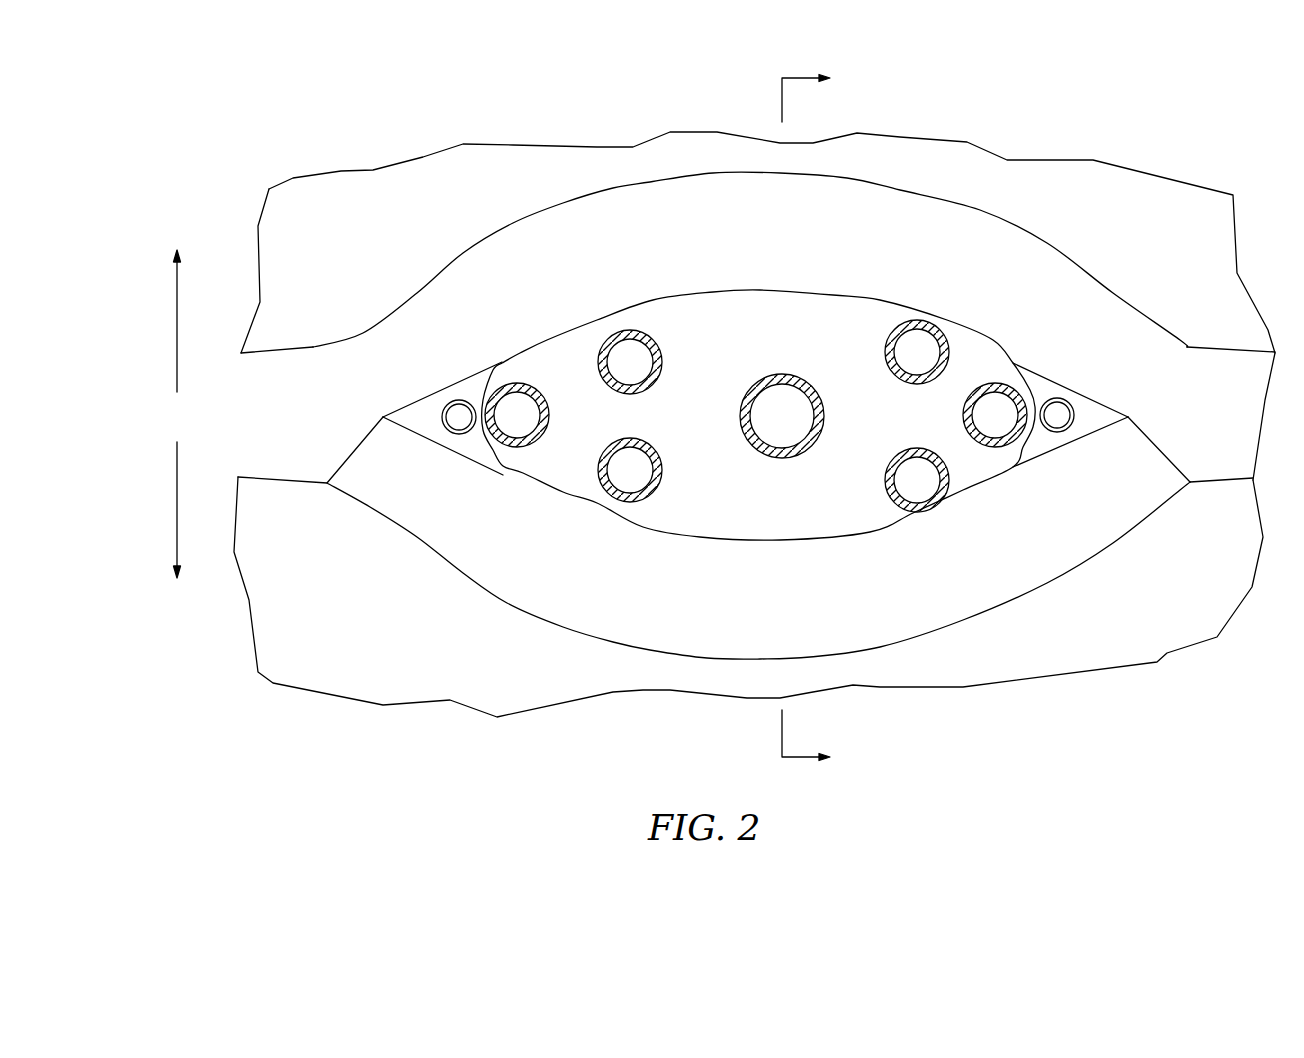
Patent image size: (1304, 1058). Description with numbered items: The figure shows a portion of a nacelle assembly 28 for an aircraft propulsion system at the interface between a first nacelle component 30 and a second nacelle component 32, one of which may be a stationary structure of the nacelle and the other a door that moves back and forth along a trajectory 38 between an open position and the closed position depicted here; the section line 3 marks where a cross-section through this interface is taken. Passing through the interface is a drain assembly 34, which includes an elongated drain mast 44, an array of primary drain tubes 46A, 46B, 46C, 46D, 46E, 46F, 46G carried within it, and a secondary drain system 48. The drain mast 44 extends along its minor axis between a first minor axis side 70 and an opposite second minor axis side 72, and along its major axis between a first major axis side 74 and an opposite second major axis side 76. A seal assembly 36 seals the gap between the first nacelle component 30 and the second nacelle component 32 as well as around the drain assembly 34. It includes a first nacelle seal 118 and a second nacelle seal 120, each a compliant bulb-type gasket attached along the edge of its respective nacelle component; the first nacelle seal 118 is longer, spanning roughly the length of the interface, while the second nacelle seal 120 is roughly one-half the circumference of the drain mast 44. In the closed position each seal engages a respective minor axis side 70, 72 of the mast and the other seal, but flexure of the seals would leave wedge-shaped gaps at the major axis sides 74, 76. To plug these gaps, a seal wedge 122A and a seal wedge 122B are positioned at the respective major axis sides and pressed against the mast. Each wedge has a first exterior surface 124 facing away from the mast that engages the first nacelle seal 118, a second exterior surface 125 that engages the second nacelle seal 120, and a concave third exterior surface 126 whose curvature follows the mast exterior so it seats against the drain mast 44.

The nacelle assembly 28 is at (234, 125).
The first nacelle component 30 is at (1192, 188).
The second nacelle component 32 is at (1197, 632).
The drain assembly 34 is at (915, 305).
The seal assembly 36 is at (1187, 346).
The trajectory 38 is at (176, 414).
The drain mast 44 is at (837, 294).
The drain tube 46A is at (549, 418).
The drain tube 46B is at (662, 344).
The drain tube 46C is at (618, 503).
The drain tube 46D is at (766, 457).
The drain tube 46E is at (886, 351).
The drain tube 46F is at (886, 492).
The drain tube 46G is at (963, 412).
The drain system 48 is at (448, 437).
The first minor axis side 70 is at (760, 290).
The second minor axis side 72 is at (763, 542).
The first major axis side 74 is at (473, 440).
The second major axis side 76 is at (1022, 462).
The first nacelle seal 118 is at (515, 223).
The second nacelle seal 120 is at (500, 603).
The seal wedge 122A is at (482, 373).
The seal wedge 122B is at (1060, 462).
The first exterior surface 124 is at (440, 397).
The second exterior surface 125 is at (440, 440).
The third exterior surface 126 is at (503, 367).
The section line 3- 3 is at (815, 417).